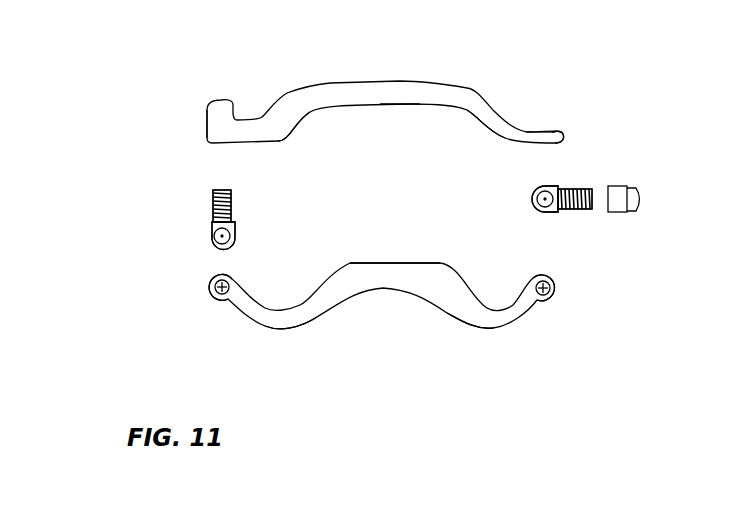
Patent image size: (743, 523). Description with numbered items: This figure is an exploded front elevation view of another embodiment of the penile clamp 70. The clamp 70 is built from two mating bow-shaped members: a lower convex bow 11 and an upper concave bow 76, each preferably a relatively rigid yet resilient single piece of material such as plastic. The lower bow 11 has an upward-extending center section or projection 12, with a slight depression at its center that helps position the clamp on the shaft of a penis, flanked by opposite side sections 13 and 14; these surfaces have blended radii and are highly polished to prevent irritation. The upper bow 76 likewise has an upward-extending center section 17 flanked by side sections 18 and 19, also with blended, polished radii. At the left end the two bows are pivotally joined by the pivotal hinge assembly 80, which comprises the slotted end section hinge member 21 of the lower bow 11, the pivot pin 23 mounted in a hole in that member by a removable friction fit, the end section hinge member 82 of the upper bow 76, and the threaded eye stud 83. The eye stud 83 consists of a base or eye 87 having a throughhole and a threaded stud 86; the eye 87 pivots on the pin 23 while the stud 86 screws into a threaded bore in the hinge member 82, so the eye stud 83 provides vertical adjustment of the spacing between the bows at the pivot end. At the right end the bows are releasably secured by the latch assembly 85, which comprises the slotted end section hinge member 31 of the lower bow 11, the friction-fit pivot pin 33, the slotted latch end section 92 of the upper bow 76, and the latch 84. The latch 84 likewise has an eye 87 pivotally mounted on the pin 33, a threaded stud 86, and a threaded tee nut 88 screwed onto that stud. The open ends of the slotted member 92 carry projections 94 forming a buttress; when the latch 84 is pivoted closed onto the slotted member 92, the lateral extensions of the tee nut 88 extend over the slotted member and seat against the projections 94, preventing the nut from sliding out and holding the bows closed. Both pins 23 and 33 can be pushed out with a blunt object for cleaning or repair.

The upper bow-shaped member 76 is at (381, 78).
The end section hinge member 82 is at (220, 128).
The center section 17 is at (400, 97).
The side section 18 is at (282, 122).
The side section 19 is at (480, 120).
The slotted latch end section 92 is at (528, 135).
The projections 94 is at (560, 128).
The pivotal hinge assembly 80 is at (144, 287).
The clamp 70 is at (408, 233).
The lower bow-shaped member 11 is at (397, 300).
The center section 12 is at (317, 275).
The side section 13 is at (280, 320).
The side section 14 is at (477, 315).
The slotted end section hinge member 21 is at (227, 302).
The pivot pin 23 is at (217, 297).
The slotted end section hinge member 31 is at (540, 302).
The pivot pin 33 is at (550, 290).
The threaded eye stud 83 is at (133, 165).
The latch 84 is at (642, 222).
The latch assembly 85 is at (679, 210).
The threaded stud 86 is at (214, 205).
The eye 87 is at (212, 240).
The threaded tee nut 88 is at (630, 190).